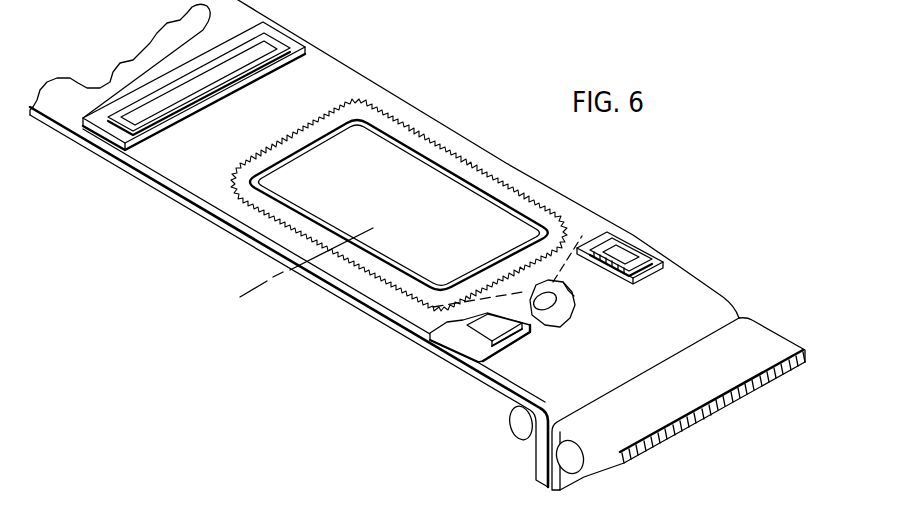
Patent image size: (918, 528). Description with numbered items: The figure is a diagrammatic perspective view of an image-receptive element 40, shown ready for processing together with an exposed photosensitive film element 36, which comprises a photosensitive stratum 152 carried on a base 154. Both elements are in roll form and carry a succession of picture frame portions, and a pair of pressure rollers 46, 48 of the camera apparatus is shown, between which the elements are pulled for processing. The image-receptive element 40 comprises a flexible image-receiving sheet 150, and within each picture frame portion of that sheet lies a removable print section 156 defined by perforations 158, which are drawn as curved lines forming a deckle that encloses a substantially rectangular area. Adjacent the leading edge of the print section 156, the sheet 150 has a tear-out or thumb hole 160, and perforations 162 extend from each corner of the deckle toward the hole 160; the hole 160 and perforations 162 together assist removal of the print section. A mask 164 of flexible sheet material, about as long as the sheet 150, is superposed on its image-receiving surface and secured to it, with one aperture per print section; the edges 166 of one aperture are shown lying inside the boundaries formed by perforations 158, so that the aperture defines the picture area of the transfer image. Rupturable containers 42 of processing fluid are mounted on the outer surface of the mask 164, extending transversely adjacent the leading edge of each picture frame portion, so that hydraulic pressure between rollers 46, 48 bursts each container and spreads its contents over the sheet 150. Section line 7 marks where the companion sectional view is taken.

The section line 7- 7 is at (341, 218).
The photosensitive film element 36 is at (758, 312).
The image-receptive element 40 is at (176, 207).
The rupturable container 42 is at (269, 40).
The pressure roller 46 is at (516, 423).
The pressure roller 48 is at (574, 468).
The image-receiving sheet 150 is at (218, 228).
The photosensitive stratum 152 is at (772, 361).
The base 154 is at (758, 385).
The removable print section 156 is at (432, 208).
The perforations 158 is at (445, 147).
The tear-out hole 160 is at (542, 308).
The perforations 162 is at (563, 266).
The mask 164 is at (333, 77).
The aperture edges 166 is at (367, 127).